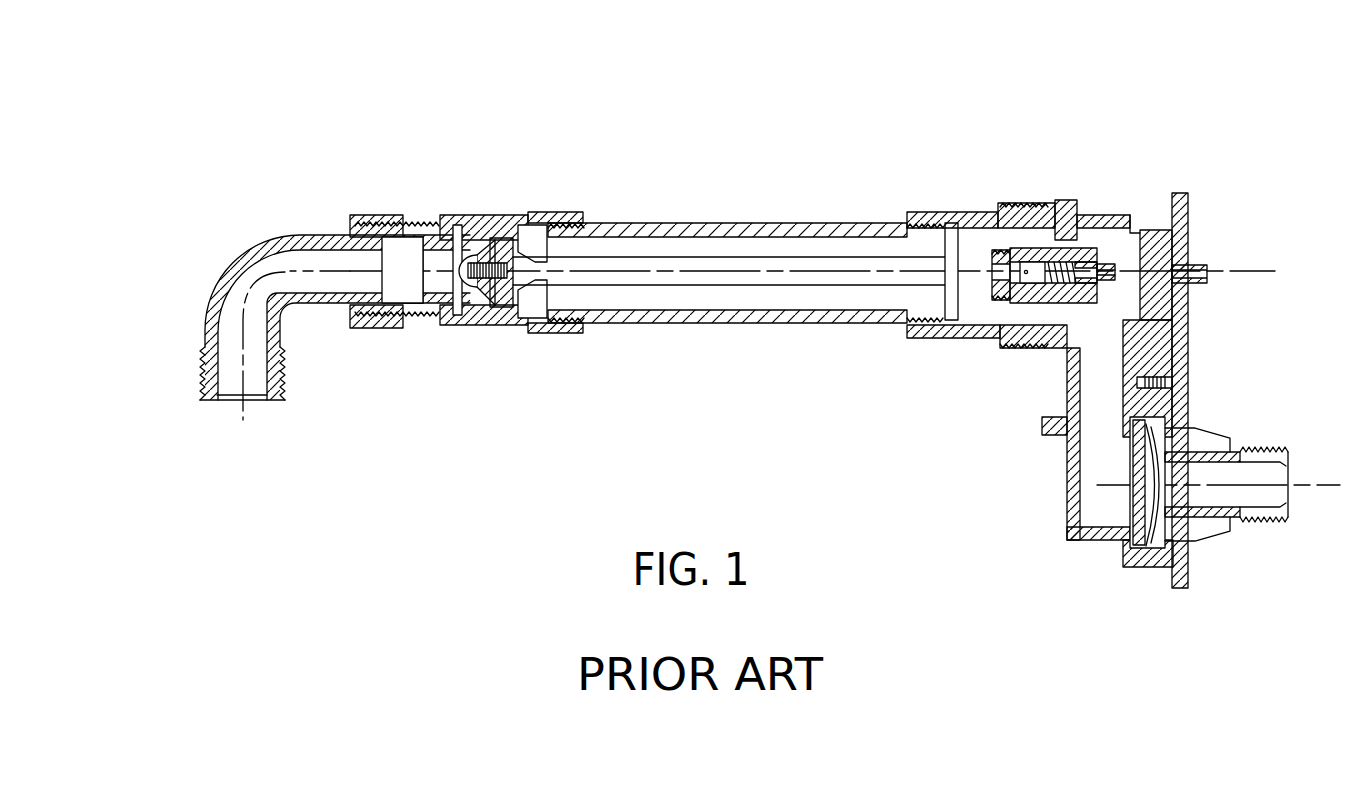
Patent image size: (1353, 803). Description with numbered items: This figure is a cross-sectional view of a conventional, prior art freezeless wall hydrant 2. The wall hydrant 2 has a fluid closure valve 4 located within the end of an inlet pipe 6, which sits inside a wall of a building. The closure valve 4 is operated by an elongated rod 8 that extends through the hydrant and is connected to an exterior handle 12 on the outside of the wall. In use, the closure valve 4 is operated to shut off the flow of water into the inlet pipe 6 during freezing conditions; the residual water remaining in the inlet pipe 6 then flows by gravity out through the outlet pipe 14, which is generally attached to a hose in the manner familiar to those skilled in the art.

The wall hydrant 2 is at (723, 178).
The fluid closure valve 4 is at (500, 240).
The inlet pipe 6 is at (283, 237).
The elongated rod 8 is at (807, 270).
The exterior handle 12 is at (1200, 265).
The outlet pipe 14 is at (1260, 470).